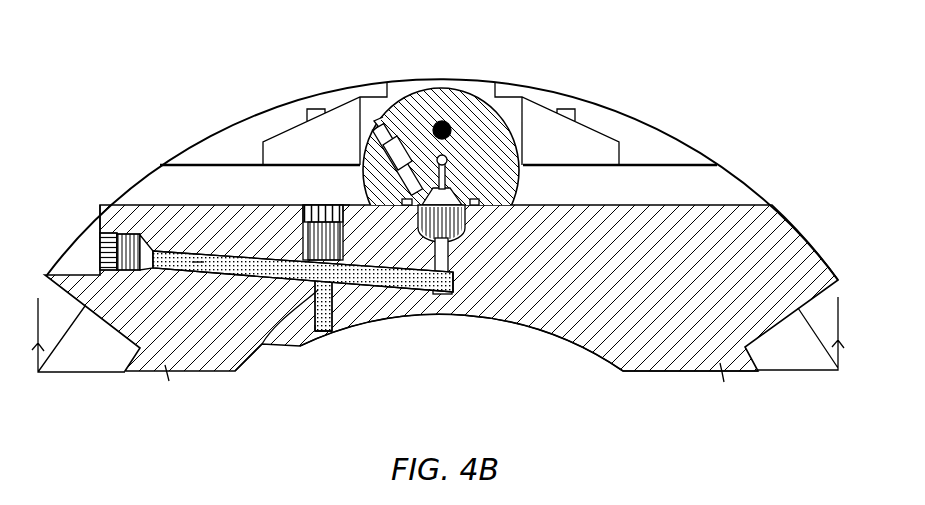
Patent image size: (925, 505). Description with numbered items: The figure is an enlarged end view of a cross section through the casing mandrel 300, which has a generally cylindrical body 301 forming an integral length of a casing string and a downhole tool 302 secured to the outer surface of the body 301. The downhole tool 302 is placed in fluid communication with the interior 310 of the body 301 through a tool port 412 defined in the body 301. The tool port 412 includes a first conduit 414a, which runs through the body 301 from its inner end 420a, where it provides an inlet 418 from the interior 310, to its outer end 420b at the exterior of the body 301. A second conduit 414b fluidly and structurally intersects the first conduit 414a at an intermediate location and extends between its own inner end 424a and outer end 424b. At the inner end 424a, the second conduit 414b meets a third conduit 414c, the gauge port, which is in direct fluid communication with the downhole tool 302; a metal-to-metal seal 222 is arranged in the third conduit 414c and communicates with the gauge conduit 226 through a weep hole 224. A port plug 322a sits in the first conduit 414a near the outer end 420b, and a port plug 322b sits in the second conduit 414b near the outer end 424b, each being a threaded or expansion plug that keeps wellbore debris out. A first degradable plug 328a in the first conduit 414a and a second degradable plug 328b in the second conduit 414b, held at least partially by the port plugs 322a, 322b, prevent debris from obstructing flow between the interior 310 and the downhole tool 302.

The casing mandrel 300 is at (140, 117).
The body 301 is at (677, 338).
The downhole tool 302 is at (478, 112).
The interior 310 is at (457, 422).
The metal-to-metal seal 222 is at (460, 176).
The weep hole 224 is at (438, 158).
The gauge conduit 226 is at (440, 121).
The port plug 322a is at (350, 205).
The port plug 322b is at (133, 264).
The first degradable plug 328a is at (262, 344).
The second degradable plug 328b is at (198, 262).
The tool port 412 is at (455, 325).
The first conduit 414a is at (332, 298).
The second conduit 414b is at (407, 283).
The third conduit 414c is at (466, 213).
The inlet 418 is at (317, 340).
The inner end 420a is at (328, 340).
The outer end 420b is at (290, 221).
The inner end 424a is at (463, 283).
The outer end 424b is at (123, 224).